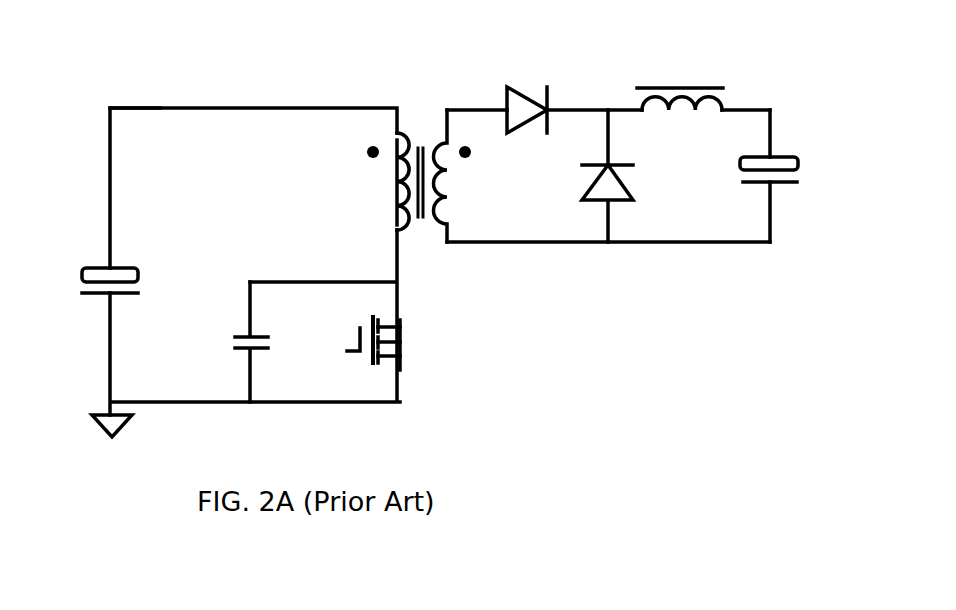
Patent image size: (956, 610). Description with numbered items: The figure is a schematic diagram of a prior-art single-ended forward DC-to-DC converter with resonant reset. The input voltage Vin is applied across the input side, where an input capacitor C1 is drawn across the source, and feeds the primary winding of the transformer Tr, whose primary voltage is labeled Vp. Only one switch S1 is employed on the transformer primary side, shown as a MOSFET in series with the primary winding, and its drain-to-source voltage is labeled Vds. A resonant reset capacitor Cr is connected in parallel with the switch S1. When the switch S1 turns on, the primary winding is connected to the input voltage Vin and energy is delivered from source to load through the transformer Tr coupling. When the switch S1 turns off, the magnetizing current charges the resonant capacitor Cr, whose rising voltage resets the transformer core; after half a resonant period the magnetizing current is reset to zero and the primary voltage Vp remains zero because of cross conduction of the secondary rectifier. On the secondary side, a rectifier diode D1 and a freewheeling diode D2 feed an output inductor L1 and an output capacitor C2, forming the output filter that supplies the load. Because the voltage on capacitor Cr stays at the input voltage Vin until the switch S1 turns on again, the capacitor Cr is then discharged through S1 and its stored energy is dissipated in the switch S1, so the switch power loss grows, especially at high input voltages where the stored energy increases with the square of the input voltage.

The input voltage Vin is at (131, 91).
The input capacitor C1 is at (87, 257).
The resonant reset capacitor Cr is at (236, 342).
The switch S1 is at (357, 336).
The drain-source voltage Vds is at (428, 344).
The primary voltage Vp is at (356, 188).
The transformer Tr is at (419, 156).
The rectifier diode D1 is at (527, 91).
The freewheeling diode D2 is at (577, 176).
The output inductor L1 is at (680, 80).
The output capacitor C2 is at (790, 176).